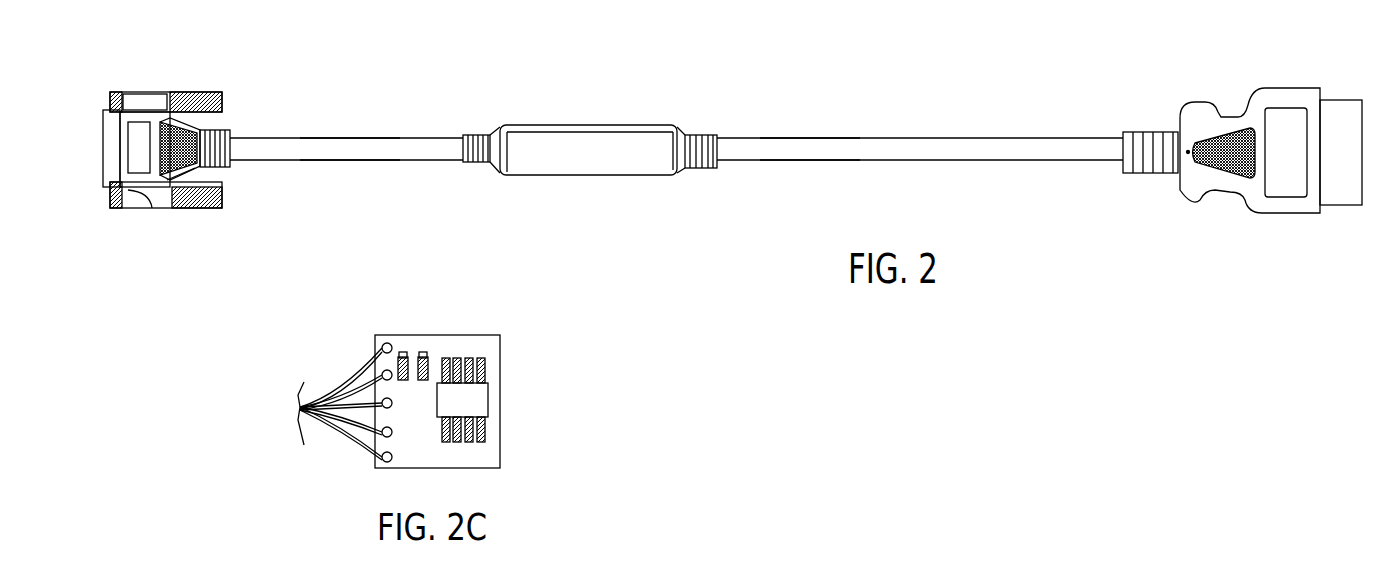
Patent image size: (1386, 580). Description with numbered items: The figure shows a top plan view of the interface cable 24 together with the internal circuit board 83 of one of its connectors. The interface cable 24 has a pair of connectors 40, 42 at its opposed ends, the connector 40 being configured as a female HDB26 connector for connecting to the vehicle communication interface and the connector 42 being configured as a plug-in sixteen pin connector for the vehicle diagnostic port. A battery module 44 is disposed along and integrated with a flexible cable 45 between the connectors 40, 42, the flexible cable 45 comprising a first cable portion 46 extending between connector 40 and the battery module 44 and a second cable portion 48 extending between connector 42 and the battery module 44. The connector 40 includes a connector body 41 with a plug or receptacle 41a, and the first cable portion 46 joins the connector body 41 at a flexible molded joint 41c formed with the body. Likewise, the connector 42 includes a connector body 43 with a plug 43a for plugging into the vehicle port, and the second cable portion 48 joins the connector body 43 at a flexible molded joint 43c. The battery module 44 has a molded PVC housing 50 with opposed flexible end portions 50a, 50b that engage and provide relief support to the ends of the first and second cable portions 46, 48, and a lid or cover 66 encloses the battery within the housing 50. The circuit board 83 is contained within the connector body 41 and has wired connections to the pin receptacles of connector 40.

In FIG. 2, the interface cable 24 is at (853, 62).
In FIG. 2, the connector 40 is at (202, 171).
In FIG. 2, the connector body 41 is at (153, 120).
In FIG. 2, the plug or receptacle 41a is at (110, 173).
In FIG. 2, the flexible molded joint 41c is at (207, 130).
In FIG. 2, the connector 42 is at (1267, 213).
In FIG. 2, the connector body 43 is at (1228, 166).
In FIG. 2, the plug 43a is at (1342, 205).
In FIG. 2, the flexible molded joint 43c is at (1143, 173).
In FIG. 2, the battery module 44 is at (523, 175).
In FIG. 2, the flexible cable 45 is at (418, 160).
In FIG. 2, the first cable portion 46 is at (350, 138).
In FIG. 2, the second cable portion 48 is at (873, 138).
In FIG. 2, the molded housing 50 is at (627, 145).
In FIG. 2, the flexible end portion 50a is at (478, 133).
In FIG. 2, the flexible end portion 50b is at (703, 132).
In FIG. 2, the lid or cover 66 is at (613, 125).
In FIG. 2C, the circuit board 83 is at (492, 350).